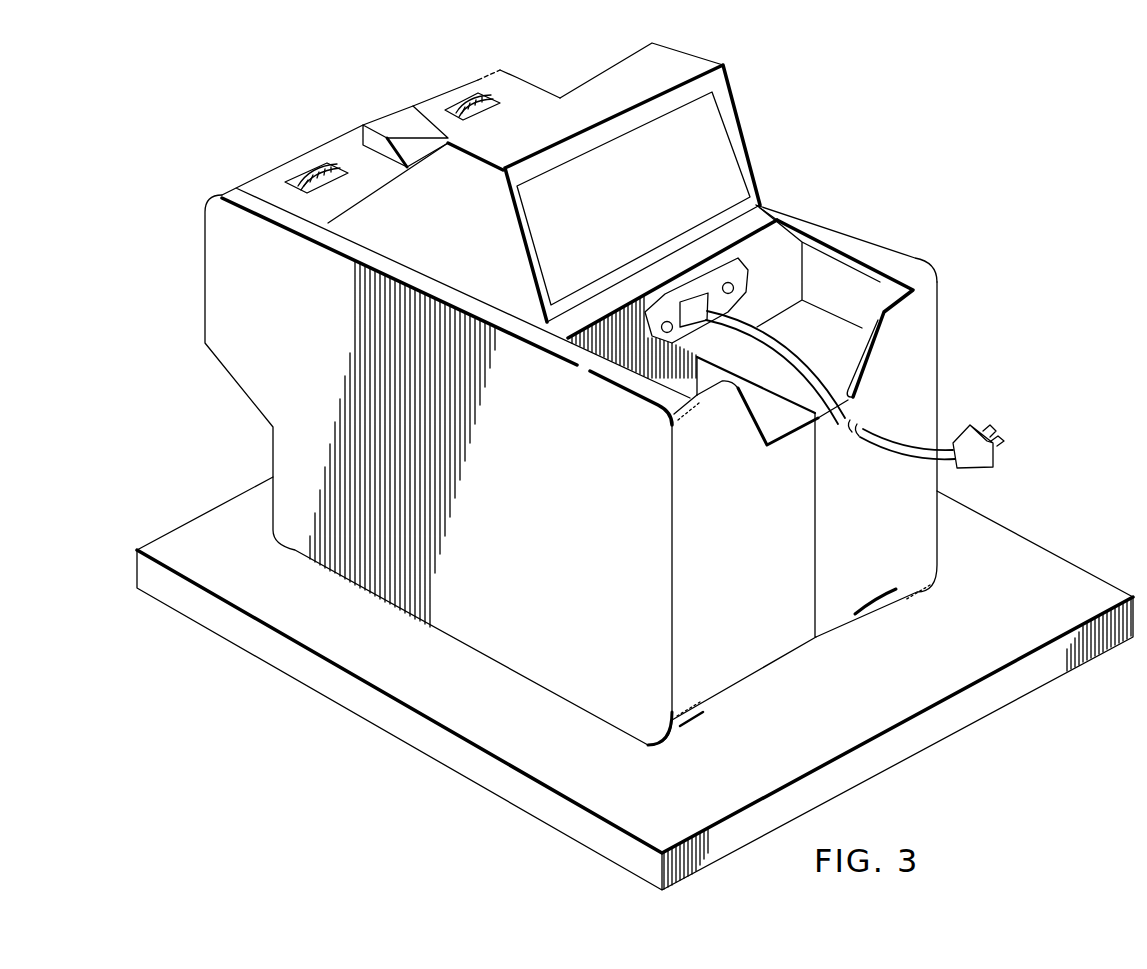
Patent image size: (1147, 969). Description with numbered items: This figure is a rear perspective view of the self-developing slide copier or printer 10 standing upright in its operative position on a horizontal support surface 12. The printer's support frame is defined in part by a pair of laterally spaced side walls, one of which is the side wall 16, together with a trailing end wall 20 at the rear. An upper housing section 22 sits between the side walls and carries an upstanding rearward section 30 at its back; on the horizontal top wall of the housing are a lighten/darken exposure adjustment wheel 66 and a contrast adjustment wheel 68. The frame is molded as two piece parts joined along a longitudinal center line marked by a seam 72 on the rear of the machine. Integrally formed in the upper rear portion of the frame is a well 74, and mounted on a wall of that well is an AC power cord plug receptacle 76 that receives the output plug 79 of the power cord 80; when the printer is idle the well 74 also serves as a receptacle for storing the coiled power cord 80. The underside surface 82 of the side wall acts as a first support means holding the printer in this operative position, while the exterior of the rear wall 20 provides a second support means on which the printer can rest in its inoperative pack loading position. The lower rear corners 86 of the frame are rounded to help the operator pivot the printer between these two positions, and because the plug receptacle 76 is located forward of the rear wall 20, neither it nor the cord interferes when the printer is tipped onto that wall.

The printer 10 is at (960, 313).
The support surface 12 is at (217, 522).
The side wall 16 is at (515, 660).
The trailing end wall 20 is at (924, 523).
The upper housing section 22 is at (380, 182).
The upstanding rearward section 30 is at (738, 61).
The lighten/darken adjustment wheel 66 is at (468, 100).
The contrast adjustment wheel 68 is at (312, 178).
The seam 72 is at (820, 485).
The well 74 is at (772, 252).
The AC power cord plug receptacle 76 is at (714, 292).
The output plug 79 is at (708, 302).
The power cord 80 is at (806, 372).
The underside surface 82 is at (447, 640).
The lower rear corners 86 is at (647, 747).